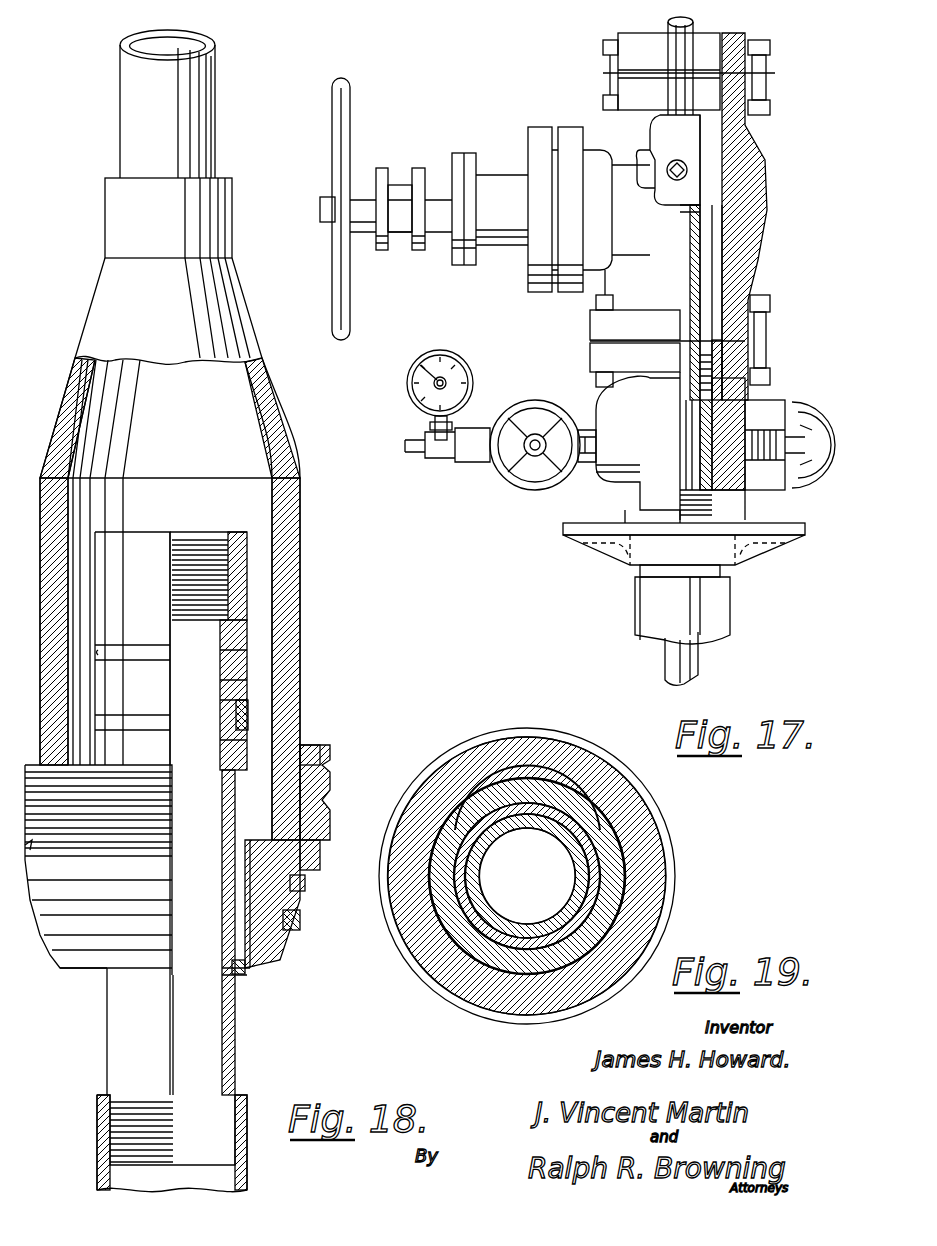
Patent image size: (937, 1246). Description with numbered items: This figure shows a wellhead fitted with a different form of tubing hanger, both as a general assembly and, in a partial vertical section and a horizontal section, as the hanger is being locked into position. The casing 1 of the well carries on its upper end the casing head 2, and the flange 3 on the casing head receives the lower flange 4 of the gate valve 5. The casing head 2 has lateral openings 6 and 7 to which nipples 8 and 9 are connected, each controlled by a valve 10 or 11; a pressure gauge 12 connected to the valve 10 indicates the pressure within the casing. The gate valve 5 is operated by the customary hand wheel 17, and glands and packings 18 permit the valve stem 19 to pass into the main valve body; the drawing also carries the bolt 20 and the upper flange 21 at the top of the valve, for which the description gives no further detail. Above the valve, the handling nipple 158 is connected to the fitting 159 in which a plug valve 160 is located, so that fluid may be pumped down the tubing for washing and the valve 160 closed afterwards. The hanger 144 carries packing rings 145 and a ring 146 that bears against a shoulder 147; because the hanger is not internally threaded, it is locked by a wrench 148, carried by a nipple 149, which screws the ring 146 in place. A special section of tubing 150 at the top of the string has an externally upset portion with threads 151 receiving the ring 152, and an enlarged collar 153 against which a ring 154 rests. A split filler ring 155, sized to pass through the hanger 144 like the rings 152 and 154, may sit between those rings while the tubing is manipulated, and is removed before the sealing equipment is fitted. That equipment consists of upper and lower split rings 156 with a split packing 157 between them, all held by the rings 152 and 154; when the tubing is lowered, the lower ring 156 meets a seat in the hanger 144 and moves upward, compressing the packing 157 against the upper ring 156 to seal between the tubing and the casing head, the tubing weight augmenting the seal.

In FIG. 17, the casing 1 is at (725, 572).
In FIG. 17, the casing head 2 is at (645, 485).
In FIG. 17, the flange 3 is at (588, 356).
In FIG. 17, the lower flange 4 is at (588, 320).
In FIG. 17, the gate valve 5 is at (760, 215).
In FIG. 17, the lateral opening 6 is at (608, 412).
In FIG. 17, the lateral opening 7 is at (750, 490).
In FIG. 17, the nipple 8 is at (590, 465).
In FIG. 17, the nipple 9 is at (778, 425).
In FIG. 17, the valve 10 is at (515, 480).
In FIG. 17, the valve 11 is at (795, 483).
In FIG. 17, the pressure gauge 12 is at (466, 376).
In FIG. 17, the hand wheel 17 is at (350, 320).
In FIG. 17, the glands and packings 18 is at (432, 222).
In FIG. 18, the valve stem 19 is at (358, 832).
In FIG. 17, the valve stem 19 is at (370, 225).
In FIG. 17, the bolt 20 is at (770, 95).
In FIG. 17, the flange 21 is at (616, 66).
In FIG. 18, the hanger 144 is at (270, 940).
In FIG. 17, the hanger 144 is at (705, 412).
In FIG. 19, the hanger 144 is at (615, 870).
In FIG. 18, the packing rings 145 is at (300, 920).
In FIG. 17, the packing rings 145 is at (735, 400).
In FIG. 18, the ring 146 is at (318, 790).
In FIG. 17, the ring 146 is at (688, 356).
In FIG. 19, the ring 146 is at (632, 800).
In FIG. 18, the shoulder 147 is at (310, 862).
In FIG. 18, the wrench 148 is at (290, 660).
In FIG. 19, the wrench 148 is at (625, 830).
In FIG. 18, the nipple 149 is at (183, 130).
In FIG. 18, the section of tubing 150 is at (237, 1040).
In FIG. 17, the section of tubing 150 is at (688, 446).
In FIG. 19, the section of tubing 150 is at (552, 830).
In FIG. 18, the threads 151 is at (236, 990).
In FIG. 18, the ring 152 is at (245, 972).
In FIG. 18, the collar 153 is at (240, 585).
In FIG. 18, the ring 154 is at (248, 668).
In FIG. 17, the split filler ring 155 is at (700, 272).
In FIG. 18, the split rings 156 is at (250, 730).
In FIG. 18, the split packing 157 is at (300, 760).
In FIG. 19, the split packing 157 is at (575, 853).
In FIG. 17, the handling nipple 158 is at (690, 48).
In FIG. 17, the fitting 159 is at (692, 140).
In FIG. 17, the valve 160 is at (688, 170).